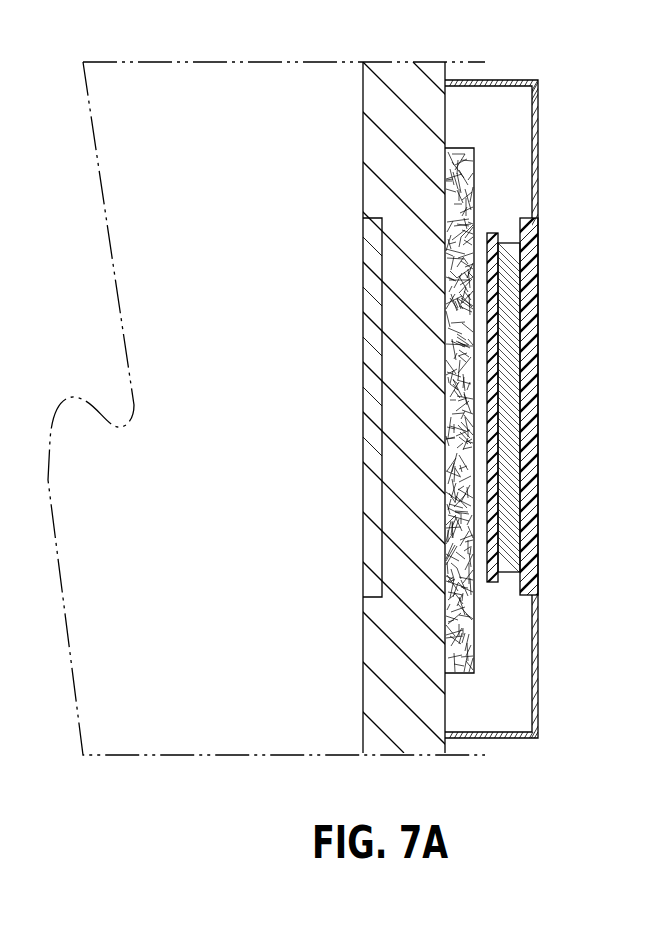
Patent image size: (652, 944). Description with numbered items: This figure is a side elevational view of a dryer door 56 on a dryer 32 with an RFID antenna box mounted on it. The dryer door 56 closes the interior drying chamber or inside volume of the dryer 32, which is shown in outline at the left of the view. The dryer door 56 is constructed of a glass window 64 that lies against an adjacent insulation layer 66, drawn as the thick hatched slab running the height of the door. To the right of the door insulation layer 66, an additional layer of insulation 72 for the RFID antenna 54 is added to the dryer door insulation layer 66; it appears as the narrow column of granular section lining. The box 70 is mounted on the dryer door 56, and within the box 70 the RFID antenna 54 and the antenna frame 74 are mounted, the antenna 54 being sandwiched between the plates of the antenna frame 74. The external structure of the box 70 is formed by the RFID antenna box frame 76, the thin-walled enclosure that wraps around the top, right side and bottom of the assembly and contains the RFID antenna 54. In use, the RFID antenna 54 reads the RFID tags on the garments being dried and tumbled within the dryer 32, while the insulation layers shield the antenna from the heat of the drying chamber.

The dryer 32 is at (197, 88).
The dryer door 56 is at (363, 735).
The insulation layer 66 is at (363, 141).
The glass window 64 is at (363, 380).
The box 70 is at (515, 127).
The additional layer of insulation 72 is at (455, 618).
The RFID antenna box frame 76 is at (540, 148).
The RFID antenna 54 is at (510, 322).
The antenna frame 74 is at (533, 568).